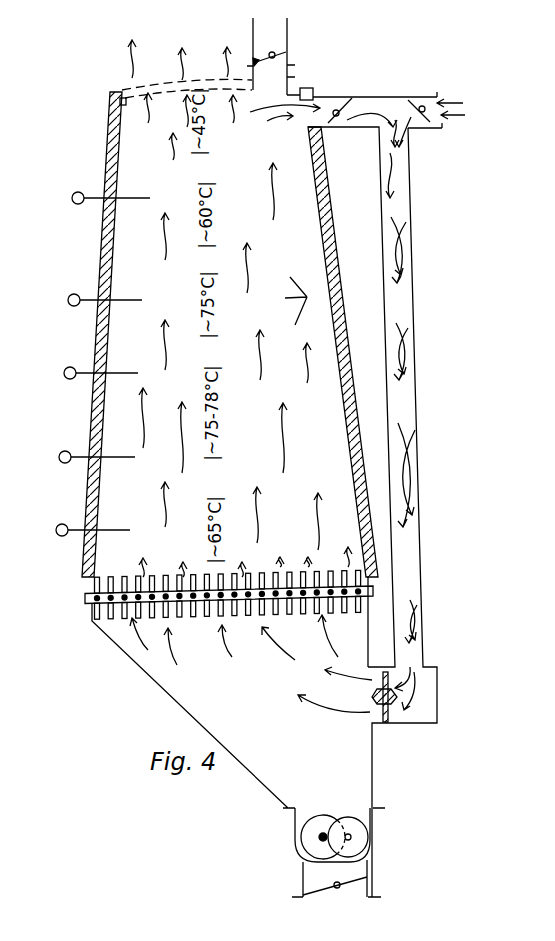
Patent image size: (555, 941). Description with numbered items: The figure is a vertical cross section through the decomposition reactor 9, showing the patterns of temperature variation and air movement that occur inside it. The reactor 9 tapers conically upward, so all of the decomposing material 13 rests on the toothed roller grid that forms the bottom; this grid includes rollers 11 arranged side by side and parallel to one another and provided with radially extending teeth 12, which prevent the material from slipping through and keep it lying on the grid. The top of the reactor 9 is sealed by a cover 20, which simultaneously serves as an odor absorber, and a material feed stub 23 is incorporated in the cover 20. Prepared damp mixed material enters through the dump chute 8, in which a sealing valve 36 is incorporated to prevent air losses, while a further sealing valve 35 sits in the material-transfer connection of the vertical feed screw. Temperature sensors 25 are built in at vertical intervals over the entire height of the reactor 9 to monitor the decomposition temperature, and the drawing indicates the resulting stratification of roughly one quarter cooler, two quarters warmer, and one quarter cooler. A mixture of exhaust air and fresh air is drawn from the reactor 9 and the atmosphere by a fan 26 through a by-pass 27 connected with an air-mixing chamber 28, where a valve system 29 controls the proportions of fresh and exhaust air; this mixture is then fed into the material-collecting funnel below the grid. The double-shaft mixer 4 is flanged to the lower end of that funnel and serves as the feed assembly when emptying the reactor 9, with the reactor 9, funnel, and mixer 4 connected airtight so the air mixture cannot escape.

The double-shaft mixer 4 is at (362, 837).
The dump chute 8 is at (283, 33).
The decomposition reactor 9 is at (142, 133).
The rollers 11 is at (87, 602).
The teeth 12 is at (192, 616).
The decomposing material 13 is at (308, 297).
The cover 20 is at (148, 98).
The material feed stub 23 is at (288, 77).
The temperature sensors 25 is at (67, 368).
The fan 26 is at (388, 710).
The by-pass 27 is at (412, 392).
The air-mixing chamber 28 is at (375, 118).
The valve system 29 is at (413, 103).
The sealing valve 35 is at (357, 882).
The sealing valve 36 is at (258, 58).